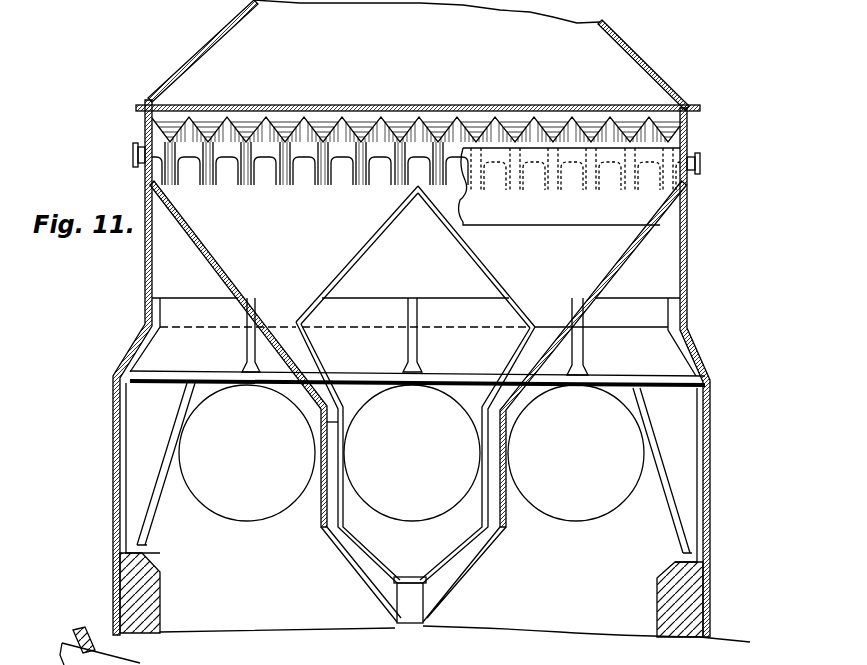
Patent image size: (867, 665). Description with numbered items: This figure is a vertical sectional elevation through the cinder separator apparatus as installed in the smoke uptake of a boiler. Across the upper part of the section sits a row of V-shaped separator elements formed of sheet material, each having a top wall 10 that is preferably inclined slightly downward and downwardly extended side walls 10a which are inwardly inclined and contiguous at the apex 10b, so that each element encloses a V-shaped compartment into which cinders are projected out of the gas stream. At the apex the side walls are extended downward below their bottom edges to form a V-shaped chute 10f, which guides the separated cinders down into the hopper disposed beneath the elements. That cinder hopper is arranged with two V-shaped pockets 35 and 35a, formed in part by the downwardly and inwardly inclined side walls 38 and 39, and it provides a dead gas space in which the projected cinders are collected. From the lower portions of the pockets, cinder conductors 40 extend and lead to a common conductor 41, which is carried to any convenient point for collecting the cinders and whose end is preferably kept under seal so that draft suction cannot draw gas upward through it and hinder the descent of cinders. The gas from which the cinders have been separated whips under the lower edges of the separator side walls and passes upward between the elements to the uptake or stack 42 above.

The top wall 10 is at (355, 125).
The side walls 10a is at (273, 137).
The apex 10b is at (357, 172).
The V-shaped chute 10f is at (323, 176).
The V-shaped pocket 35 is at (252, 268).
The V-shaped pocket 35a is at (548, 290).
The side wall 38 is at (208, 253).
The side wall 39 is at (358, 253).
The cinder conductor 40 is at (323, 362).
The common conductor 41 is at (410, 622).
The uptake or stack 42 is at (662, 85).